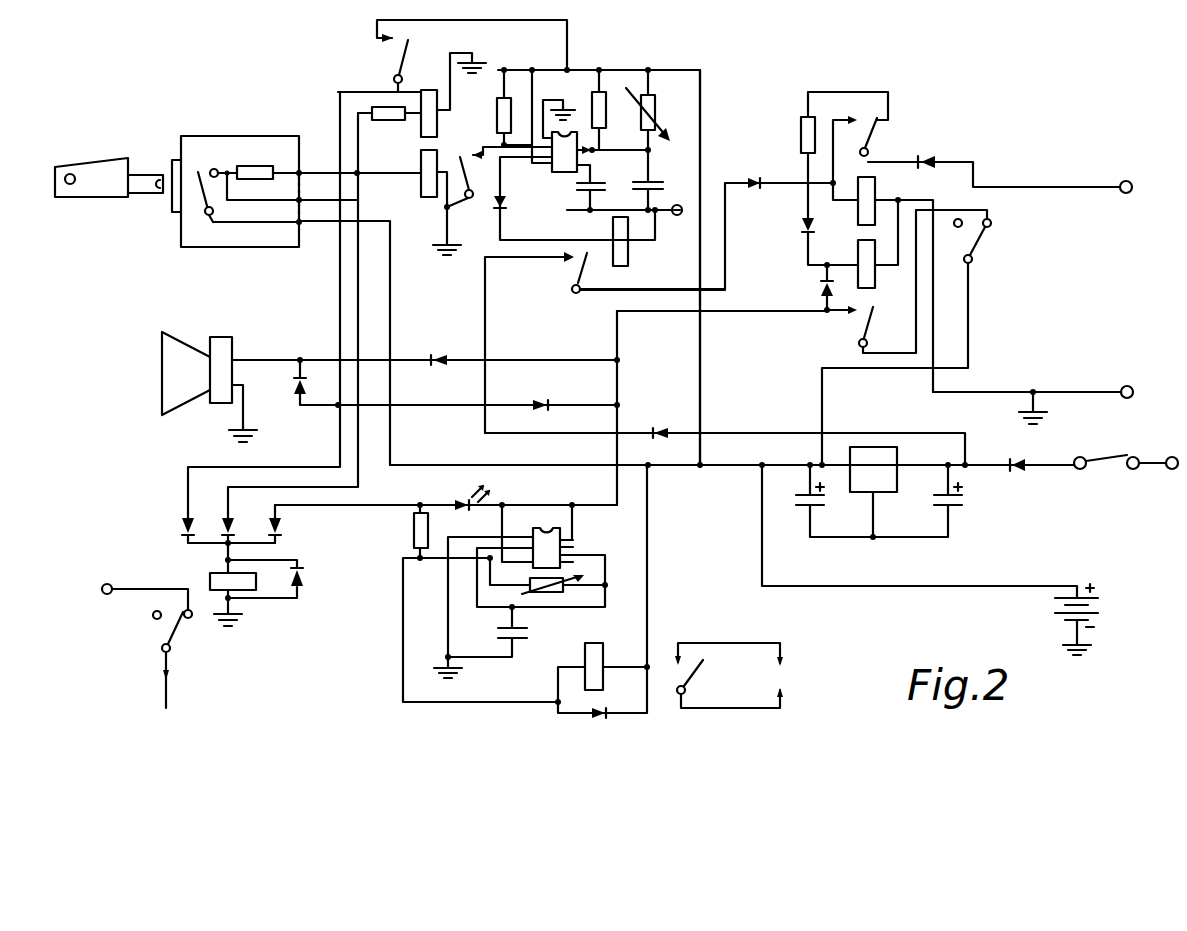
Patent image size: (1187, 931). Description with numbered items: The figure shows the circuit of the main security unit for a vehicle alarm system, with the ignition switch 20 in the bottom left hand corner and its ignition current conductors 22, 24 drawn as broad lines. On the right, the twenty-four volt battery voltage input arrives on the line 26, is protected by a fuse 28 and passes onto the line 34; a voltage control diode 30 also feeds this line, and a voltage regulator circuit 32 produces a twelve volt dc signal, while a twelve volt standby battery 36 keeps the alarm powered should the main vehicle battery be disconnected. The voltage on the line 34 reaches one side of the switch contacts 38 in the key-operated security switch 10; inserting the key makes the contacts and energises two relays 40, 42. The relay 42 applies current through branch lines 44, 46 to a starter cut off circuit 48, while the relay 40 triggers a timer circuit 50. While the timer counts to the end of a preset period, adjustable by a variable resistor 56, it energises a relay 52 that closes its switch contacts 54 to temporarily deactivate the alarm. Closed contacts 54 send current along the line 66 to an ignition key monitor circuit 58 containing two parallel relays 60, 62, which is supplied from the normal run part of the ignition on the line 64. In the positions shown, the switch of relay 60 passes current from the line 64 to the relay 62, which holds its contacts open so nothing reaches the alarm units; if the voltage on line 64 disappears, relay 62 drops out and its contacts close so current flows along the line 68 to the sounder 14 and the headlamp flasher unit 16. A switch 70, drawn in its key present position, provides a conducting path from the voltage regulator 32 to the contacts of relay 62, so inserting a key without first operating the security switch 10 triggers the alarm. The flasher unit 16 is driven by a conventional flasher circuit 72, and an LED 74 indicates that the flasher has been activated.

The key-operated security switch 10 is at (219, 136).
The sound emitter 14 is at (250, 360).
The headlamp flasher unit 16 is at (758, 680).
The ignition switch 20 is at (154, 632).
The conductor 22 is at (157, 565).
The conductor 24 is at (172, 697).
The battery voltage input line 26 is at (1147, 455).
The fuse 28 is at (1112, 470).
The voltage control diode 30 is at (1018, 470).
The voltage regulator circuit 32 is at (897, 478).
The supply line 34 is at (728, 470).
The standby battery 36 is at (1098, 613).
The switch contacts 38 is at (197, 200).
The relay 40 is at (421, 192).
The relay 42 is at (418, 100).
The branch line 44 is at (700, 355).
The branch line 46 is at (340, 295).
The starter cut off circuit 48 is at (168, 513).
The timer circuit 50 is at (600, 55).
The relay 52 is at (633, 258).
The switch contacts 54 is at (578, 272).
The variable resistor 56 is at (657, 102).
The ignition key monitor circuit 58 is at (925, 98).
The relay 60 is at (878, 192).
The relay 62 is at (858, 240).
The line 64 is at (1072, 186).
The line 66 is at (731, 181).
The line 68 is at (660, 312).
The switch 70 is at (975, 246).
The flasher circuit 72 is at (630, 612).
The LED 74 is at (452, 492).